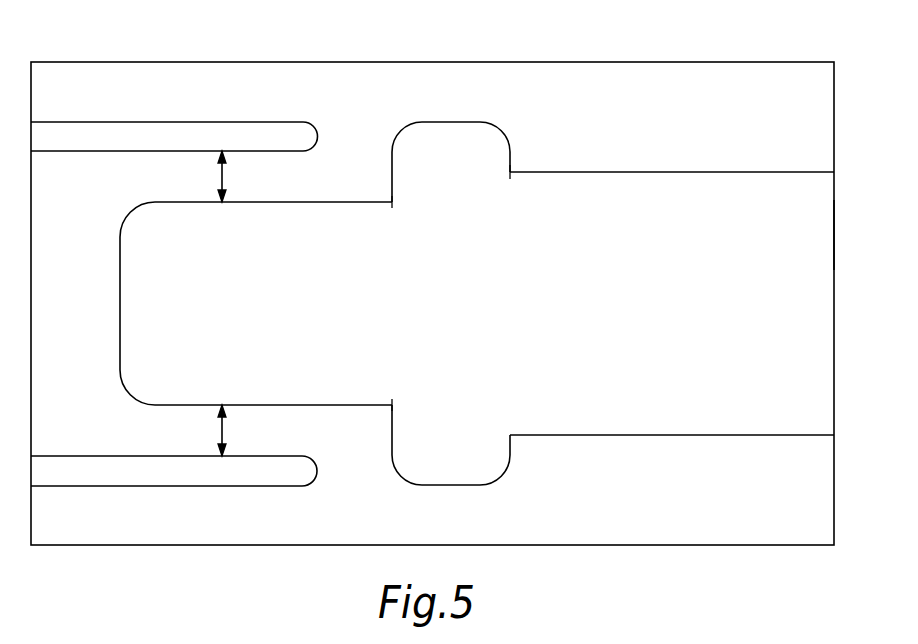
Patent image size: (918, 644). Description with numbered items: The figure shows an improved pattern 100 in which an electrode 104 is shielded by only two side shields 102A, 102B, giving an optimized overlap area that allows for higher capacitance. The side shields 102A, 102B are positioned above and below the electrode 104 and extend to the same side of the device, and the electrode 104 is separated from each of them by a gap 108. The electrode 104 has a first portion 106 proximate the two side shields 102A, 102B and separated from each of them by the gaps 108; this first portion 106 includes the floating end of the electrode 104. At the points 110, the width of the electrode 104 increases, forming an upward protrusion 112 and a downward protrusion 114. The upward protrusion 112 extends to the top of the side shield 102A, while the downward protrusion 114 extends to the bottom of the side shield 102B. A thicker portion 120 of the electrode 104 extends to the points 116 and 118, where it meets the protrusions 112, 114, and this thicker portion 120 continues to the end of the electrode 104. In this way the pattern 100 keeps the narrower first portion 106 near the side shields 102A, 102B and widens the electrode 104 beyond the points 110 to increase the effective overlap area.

The improved pattern 100 is at (813, 62).
The side shield 102A is at (160, 122).
The side shield 102B is at (212, 487).
The electrode 104 is at (672, 172).
The first portion 106 is at (145, 269).
The gap 108 is at (225, 177).
The points 110 is at (392, 202).
The upward protrusion 112 is at (443, 128).
The downward protrusion 114 is at (450, 485).
The point 116 is at (510, 172).
The point 118 is at (510, 435).
The thicker portion 120 is at (810, 237).